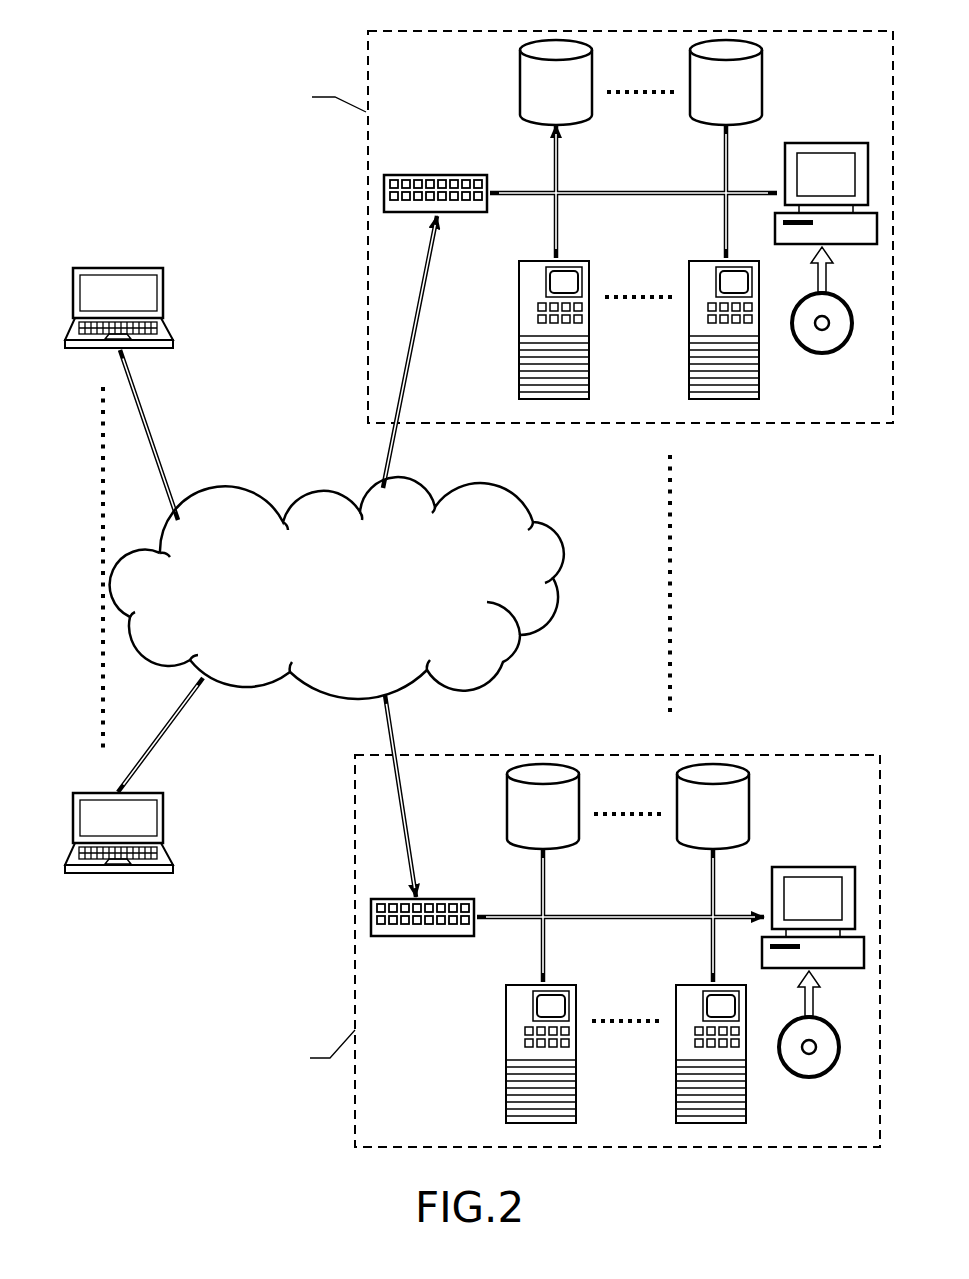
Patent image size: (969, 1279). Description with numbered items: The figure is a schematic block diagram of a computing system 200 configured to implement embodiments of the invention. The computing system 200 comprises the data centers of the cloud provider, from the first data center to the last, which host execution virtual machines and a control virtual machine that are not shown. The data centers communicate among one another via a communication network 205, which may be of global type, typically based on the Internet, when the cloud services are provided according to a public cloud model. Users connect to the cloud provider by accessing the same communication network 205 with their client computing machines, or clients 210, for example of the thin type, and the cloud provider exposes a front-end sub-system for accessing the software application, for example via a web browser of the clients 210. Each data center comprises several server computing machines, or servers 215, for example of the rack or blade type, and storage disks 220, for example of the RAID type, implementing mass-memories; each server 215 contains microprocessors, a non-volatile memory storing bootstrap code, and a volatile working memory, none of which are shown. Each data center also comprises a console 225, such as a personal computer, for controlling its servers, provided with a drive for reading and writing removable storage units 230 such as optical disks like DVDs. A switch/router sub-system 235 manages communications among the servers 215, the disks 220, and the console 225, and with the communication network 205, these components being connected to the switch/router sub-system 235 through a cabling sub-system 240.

The computing system 200 is at (180, 64).
The communication network 205 is at (503, 660).
The client 210 is at (118, 268).
The server 215 is at (520, 365).
The storage disk 220 is at (518, 105).
The console 225 is at (800, 143).
The removable storage unit 230 is at (805, 350).
The switch/router sub-system 235 is at (452, 213).
The cabling sub-system 240 is at (620, 197).